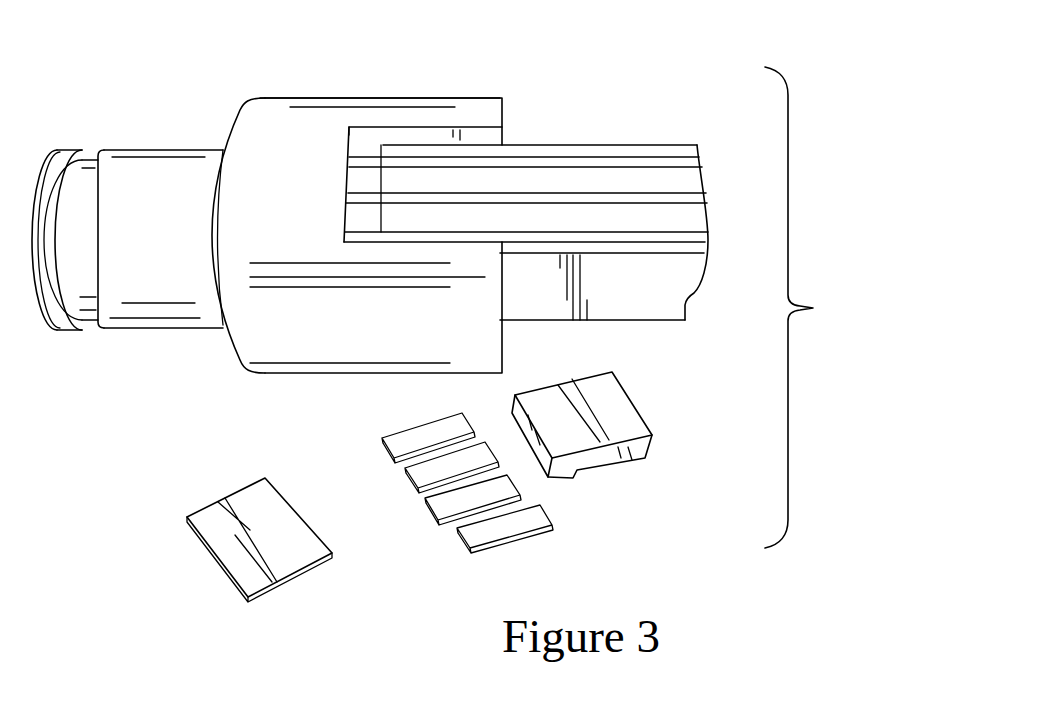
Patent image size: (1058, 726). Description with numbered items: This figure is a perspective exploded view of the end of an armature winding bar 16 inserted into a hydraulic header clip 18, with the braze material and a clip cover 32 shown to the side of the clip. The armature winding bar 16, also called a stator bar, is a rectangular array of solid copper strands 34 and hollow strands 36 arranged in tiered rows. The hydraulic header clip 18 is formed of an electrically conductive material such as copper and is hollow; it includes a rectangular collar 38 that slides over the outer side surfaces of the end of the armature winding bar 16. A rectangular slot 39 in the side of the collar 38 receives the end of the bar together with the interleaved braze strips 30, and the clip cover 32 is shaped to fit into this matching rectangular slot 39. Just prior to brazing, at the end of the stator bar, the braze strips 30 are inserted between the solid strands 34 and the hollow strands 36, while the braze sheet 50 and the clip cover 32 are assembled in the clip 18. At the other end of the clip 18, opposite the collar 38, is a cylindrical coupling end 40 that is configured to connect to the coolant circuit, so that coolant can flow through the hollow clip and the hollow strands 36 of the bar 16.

The armature winding bar 16 is at (718, 201).
The hydraulic header clip 18 is at (453, 96).
The braze strips 30 is at (457, 558).
The clip cover 32 is at (640, 427).
The solid copper strands 34 is at (683, 215).
The hollow strands 36 is at (702, 150).
The rectangular collar 38 is at (296, 154).
The rectangular slot 39 is at (346, 147).
The cylindrical coupling end 40 is at (163, 283).
The braze sheet 50 is at (247, 510).